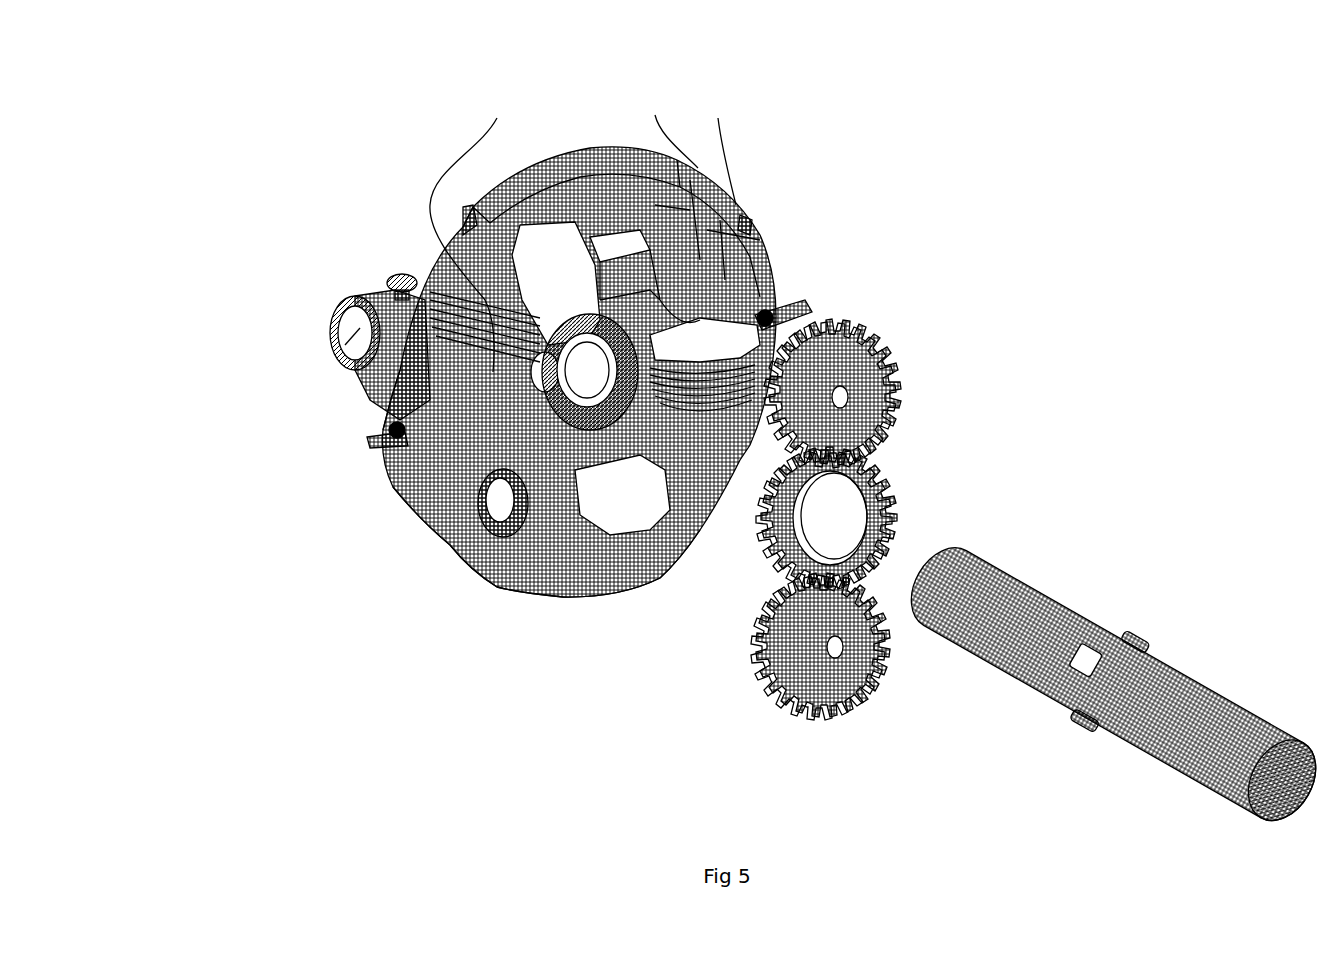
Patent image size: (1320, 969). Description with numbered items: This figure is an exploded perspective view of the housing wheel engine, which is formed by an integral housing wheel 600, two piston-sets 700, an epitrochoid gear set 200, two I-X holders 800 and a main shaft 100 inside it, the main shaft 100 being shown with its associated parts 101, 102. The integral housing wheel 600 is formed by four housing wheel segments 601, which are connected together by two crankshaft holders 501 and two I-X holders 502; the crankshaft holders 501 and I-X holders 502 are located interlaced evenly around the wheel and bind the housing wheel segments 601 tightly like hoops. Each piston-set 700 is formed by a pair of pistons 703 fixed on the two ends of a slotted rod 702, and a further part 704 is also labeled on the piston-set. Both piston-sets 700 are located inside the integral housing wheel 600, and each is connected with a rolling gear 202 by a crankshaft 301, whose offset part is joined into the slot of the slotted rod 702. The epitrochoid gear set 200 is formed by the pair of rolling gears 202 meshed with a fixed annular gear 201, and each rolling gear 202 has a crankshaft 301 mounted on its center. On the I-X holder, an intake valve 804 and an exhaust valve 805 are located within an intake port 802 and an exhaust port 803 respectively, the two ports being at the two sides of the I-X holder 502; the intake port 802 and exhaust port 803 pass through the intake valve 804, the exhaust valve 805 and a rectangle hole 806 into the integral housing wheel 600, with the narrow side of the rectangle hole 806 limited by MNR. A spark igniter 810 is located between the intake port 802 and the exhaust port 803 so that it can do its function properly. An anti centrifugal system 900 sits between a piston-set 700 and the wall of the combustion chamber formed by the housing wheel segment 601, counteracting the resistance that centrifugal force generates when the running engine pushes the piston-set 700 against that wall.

The main shaft 100 is at (1106, 667).
The battery cell 101 is at (1035, 630).
The battery contact 102 is at (1133, 636).
The epitrochoid gear set 200 is at (913, 497).
The fixed annular gear 201 is at (871, 500).
The rolling gear 202 is at (897, 358).
The crankshaft 301 is at (707, 230).
The crankshaft holder 501 is at (656, 668).
The I-X holder 502 is at (430, 478).
The integral housing wheel 600 is at (596, 592).
The housing wheel segment 601 is at (497, 590).
The piston-set 700 is at (483, 68).
The slotted rod 702 is at (725, 147).
The piston 703 is at (540, 255).
The motor boss 704 is at (479, 231).
The I-X holder 800 is at (323, 393).
The intake port 802 is at (500, 502).
The exhaust port 803 is at (333, 347).
The intake valve 804 is at (465, 578).
The exhaust valve 805 is at (395, 270).
The rectangle hole 806 is at (477, 207).
The spark igniter 810 is at (367, 440).
The anti centrifugal system 900 is at (671, 129).